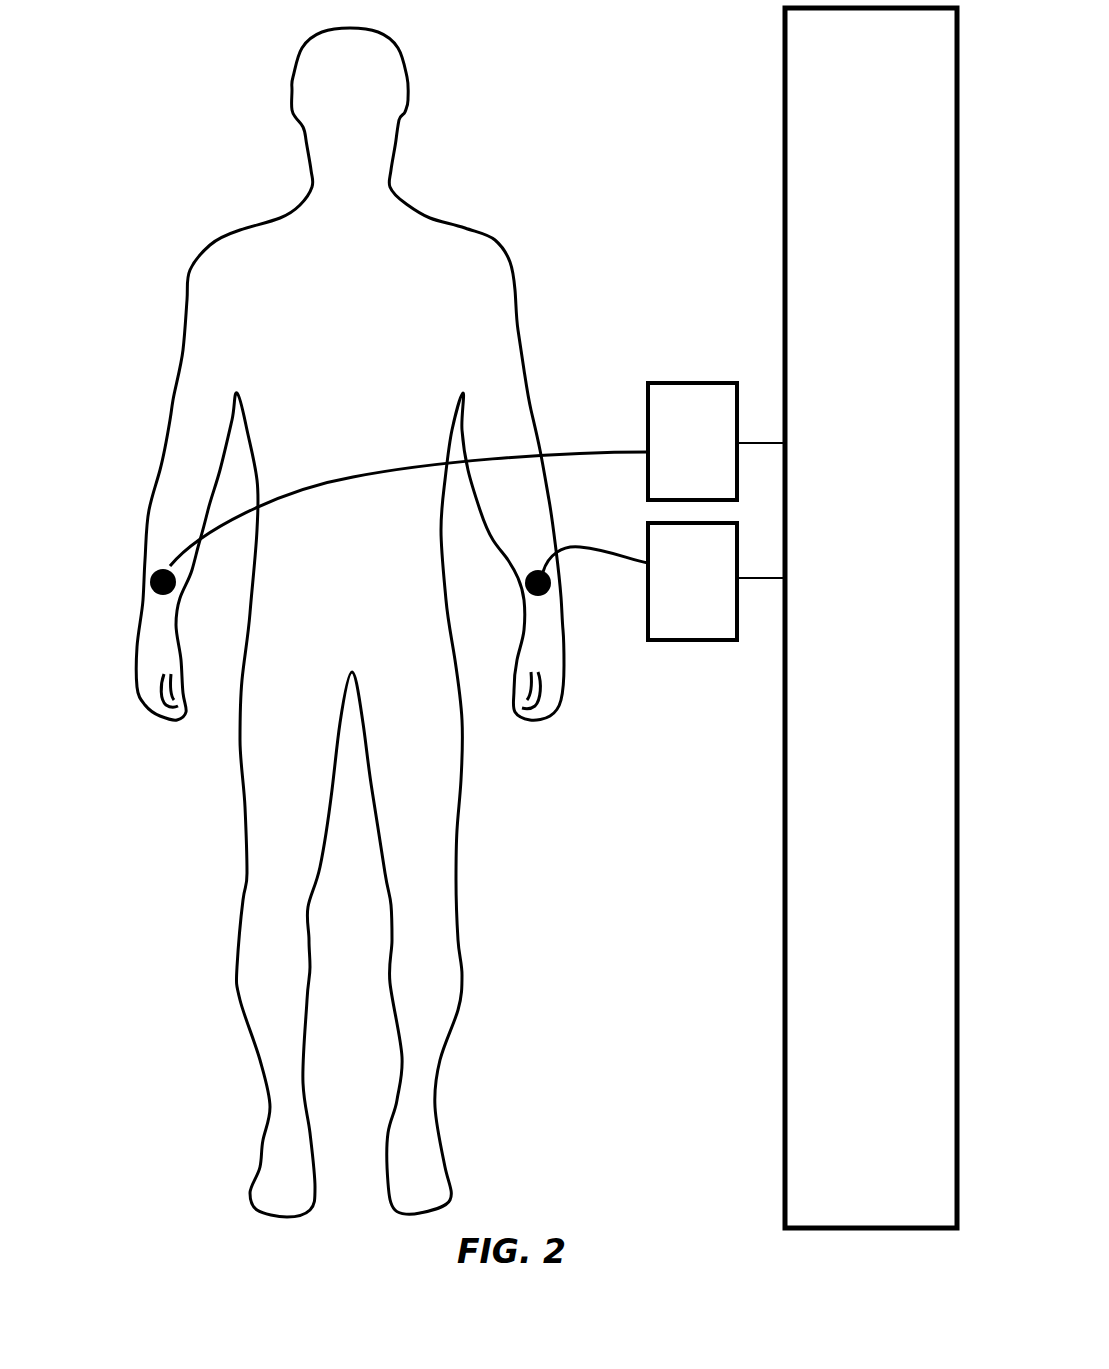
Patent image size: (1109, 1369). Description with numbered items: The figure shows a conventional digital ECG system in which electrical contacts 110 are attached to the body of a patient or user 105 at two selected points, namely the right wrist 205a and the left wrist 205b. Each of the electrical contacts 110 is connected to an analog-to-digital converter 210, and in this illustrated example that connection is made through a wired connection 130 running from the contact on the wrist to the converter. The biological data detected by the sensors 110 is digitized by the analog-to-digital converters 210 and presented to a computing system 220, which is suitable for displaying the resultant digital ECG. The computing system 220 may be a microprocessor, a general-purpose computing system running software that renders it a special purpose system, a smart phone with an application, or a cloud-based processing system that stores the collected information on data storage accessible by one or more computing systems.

The patient or user 105 is at (402, 187).
The electrical contacts 110 is at (155, 607).
The wired connection 130 is at (409, 557).
The right wrist 205a is at (182, 593).
The left wrist 205b is at (520, 598).
The analog-to-digital converters 210 is at (692, 375).
The computing system 220 is at (808, 1118).